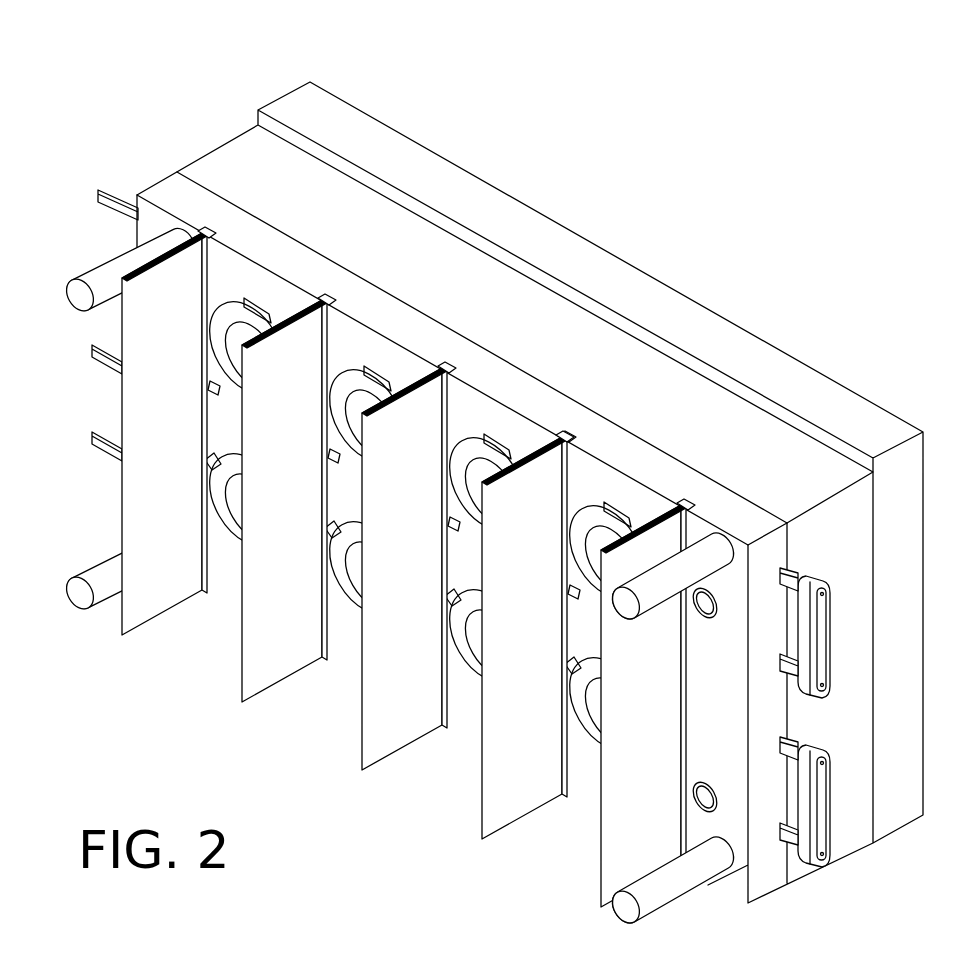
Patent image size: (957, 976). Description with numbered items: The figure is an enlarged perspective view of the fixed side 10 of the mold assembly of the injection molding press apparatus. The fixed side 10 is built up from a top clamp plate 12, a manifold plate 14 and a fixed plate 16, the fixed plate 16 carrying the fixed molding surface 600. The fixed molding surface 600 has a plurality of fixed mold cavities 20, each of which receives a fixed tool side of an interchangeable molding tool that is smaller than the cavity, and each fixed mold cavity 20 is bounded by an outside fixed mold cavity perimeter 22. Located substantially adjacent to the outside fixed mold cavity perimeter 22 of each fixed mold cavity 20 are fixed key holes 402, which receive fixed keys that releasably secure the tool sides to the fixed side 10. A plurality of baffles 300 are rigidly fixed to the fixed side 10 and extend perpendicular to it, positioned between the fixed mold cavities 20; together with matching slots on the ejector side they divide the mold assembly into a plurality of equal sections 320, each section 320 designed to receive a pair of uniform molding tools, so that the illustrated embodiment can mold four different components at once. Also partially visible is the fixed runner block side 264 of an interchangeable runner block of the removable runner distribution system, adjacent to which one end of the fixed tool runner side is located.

The fixed side 10 is at (200, 61).
The top clamp plate 12 is at (517, 223).
The manifold plate 14 is at (243, 160).
The fixed plate 16 is at (288, 266).
The fixed mold cavity 20 is at (477, 470).
The outside fixed mold cavity perimeter 22 is at (363, 400).
The fixed runner block side 264 is at (360, 495).
The baffle 300 is at (364, 770).
The section 320 is at (575, 437).
The fixed key hole 402 is at (612, 500).
The fixed molding surface 600 is at (230, 597).